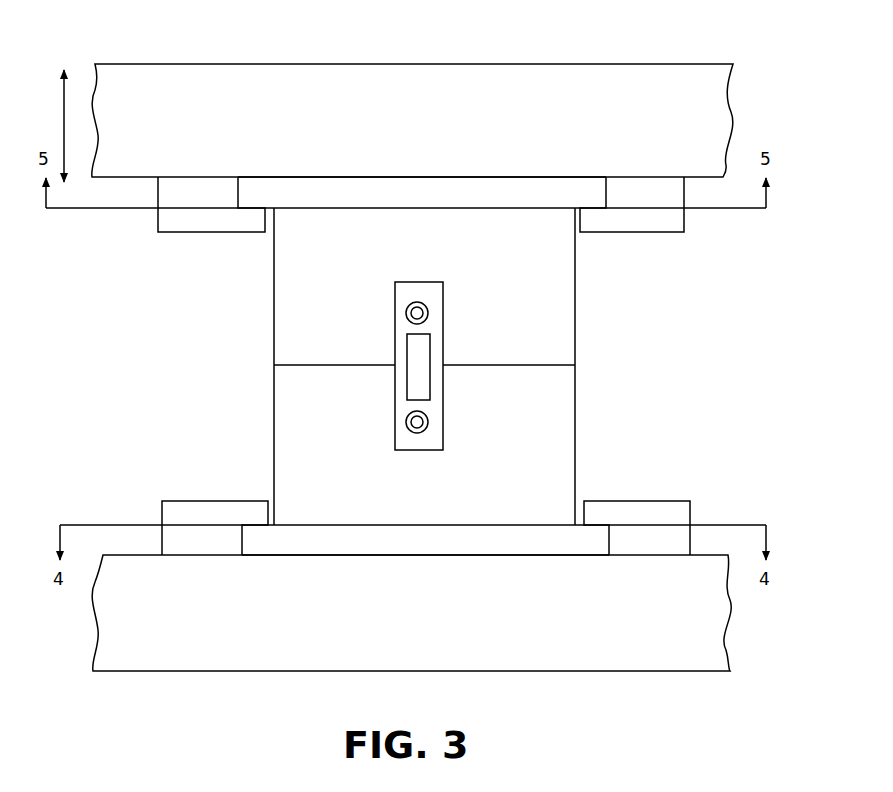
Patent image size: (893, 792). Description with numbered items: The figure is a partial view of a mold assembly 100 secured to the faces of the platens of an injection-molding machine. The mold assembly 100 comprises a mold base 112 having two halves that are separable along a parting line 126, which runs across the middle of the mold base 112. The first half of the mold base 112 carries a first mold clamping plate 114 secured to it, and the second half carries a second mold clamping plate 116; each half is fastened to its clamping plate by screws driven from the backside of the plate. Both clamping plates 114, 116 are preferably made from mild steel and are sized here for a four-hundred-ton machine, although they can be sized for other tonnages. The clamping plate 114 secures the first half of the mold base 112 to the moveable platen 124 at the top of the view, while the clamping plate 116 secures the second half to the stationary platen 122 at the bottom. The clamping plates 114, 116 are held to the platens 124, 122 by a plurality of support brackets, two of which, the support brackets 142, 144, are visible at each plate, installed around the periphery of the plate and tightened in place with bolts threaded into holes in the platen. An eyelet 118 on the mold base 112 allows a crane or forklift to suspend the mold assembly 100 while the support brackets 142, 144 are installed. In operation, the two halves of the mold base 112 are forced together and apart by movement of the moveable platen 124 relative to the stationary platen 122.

The mold assembly 100 is at (196, 331).
The mold base 112 is at (580, 388).
The first mold clamping plate 114 is at (355, 177).
The second mold clamping plate 116 is at (377, 556).
The eyelet 118 is at (430, 340).
The stationary platen 122 is at (522, 672).
The moveable platen 124 is at (530, 62).
The parting line 126 is at (272, 368).
The support bracket 142 is at (184, 232).
The support bracket 144 is at (648, 232).